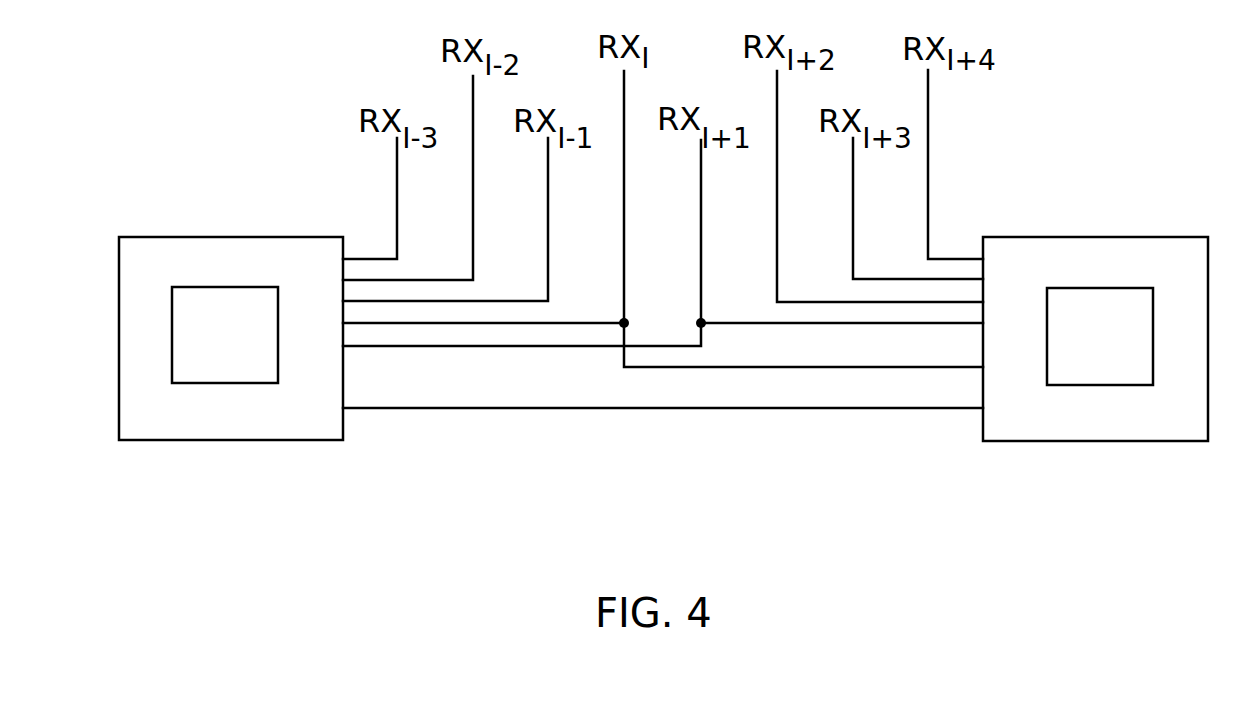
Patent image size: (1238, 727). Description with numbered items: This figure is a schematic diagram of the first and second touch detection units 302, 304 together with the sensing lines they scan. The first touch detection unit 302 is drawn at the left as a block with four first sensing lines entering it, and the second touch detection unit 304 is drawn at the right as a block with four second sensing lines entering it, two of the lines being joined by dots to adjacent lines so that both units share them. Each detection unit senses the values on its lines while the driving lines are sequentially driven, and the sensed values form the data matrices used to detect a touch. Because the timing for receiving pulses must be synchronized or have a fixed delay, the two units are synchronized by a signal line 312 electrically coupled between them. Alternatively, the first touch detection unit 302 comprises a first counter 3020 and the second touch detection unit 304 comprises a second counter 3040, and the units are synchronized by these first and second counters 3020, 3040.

The first touch detection unit 302 is at (240, 440).
The first counter 3020 is at (230, 287).
The second touch detection unit 304 is at (1118, 441).
The second counter 3040 is at (1105, 288).
The signal line 312 is at (677, 408).